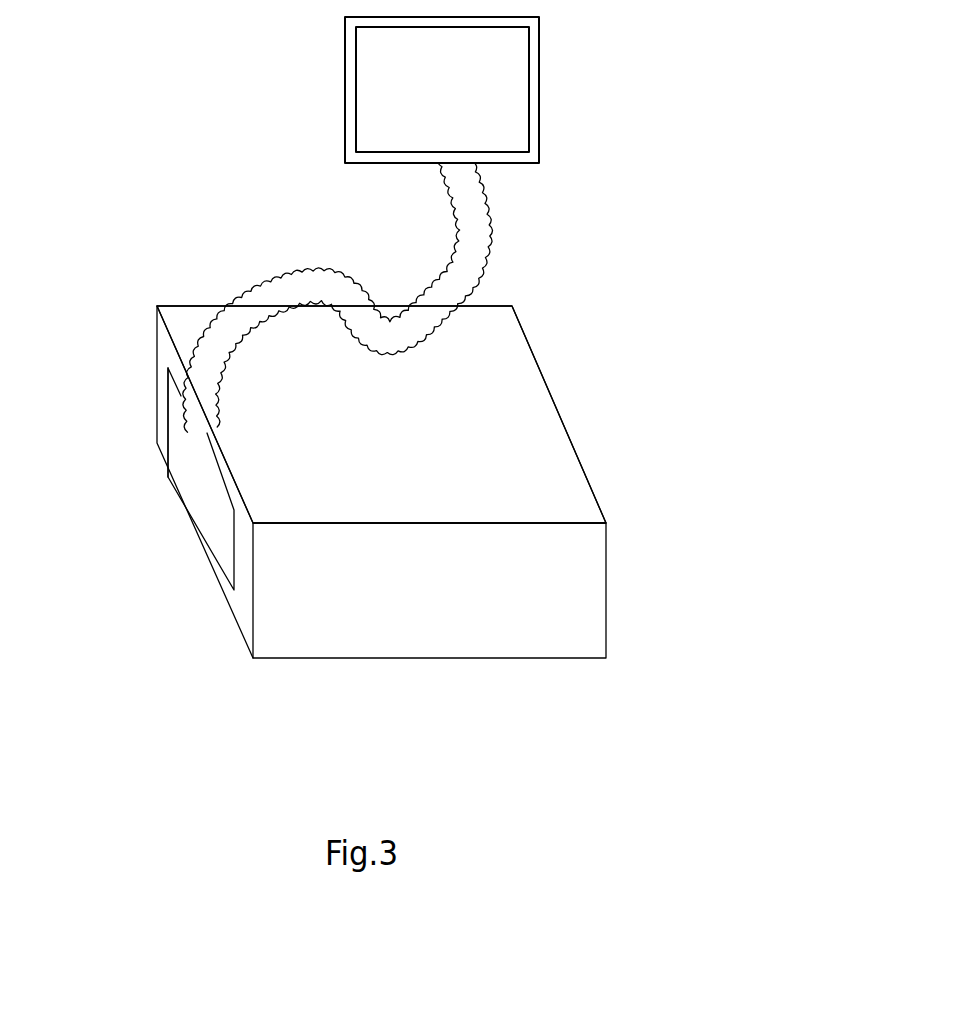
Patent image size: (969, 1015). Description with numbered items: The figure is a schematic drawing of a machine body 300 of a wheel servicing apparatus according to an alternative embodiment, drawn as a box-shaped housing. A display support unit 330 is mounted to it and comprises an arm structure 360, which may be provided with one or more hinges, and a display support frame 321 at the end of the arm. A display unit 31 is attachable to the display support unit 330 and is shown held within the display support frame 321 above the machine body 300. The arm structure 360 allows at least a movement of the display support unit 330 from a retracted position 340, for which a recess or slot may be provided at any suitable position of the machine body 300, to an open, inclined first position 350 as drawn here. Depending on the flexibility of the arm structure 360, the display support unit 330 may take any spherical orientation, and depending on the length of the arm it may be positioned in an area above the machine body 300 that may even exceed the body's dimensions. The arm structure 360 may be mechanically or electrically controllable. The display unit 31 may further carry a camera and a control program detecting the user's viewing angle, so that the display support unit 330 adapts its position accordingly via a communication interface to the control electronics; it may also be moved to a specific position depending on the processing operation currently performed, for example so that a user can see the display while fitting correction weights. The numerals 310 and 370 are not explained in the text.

The machine body 300 is at (690, 323).
The base housing 310 is at (606, 568).
The display support frame 321 is at (539, 87).
The display support unit 330 is at (673, 102).
The retracted position 340 is at (193, 465).
The first position 350 is at (390, 89).
The arm structure 360 is at (658, 410).
The slot inner wall 370 is at (170, 408).
The display unit 31 is at (435, 93).